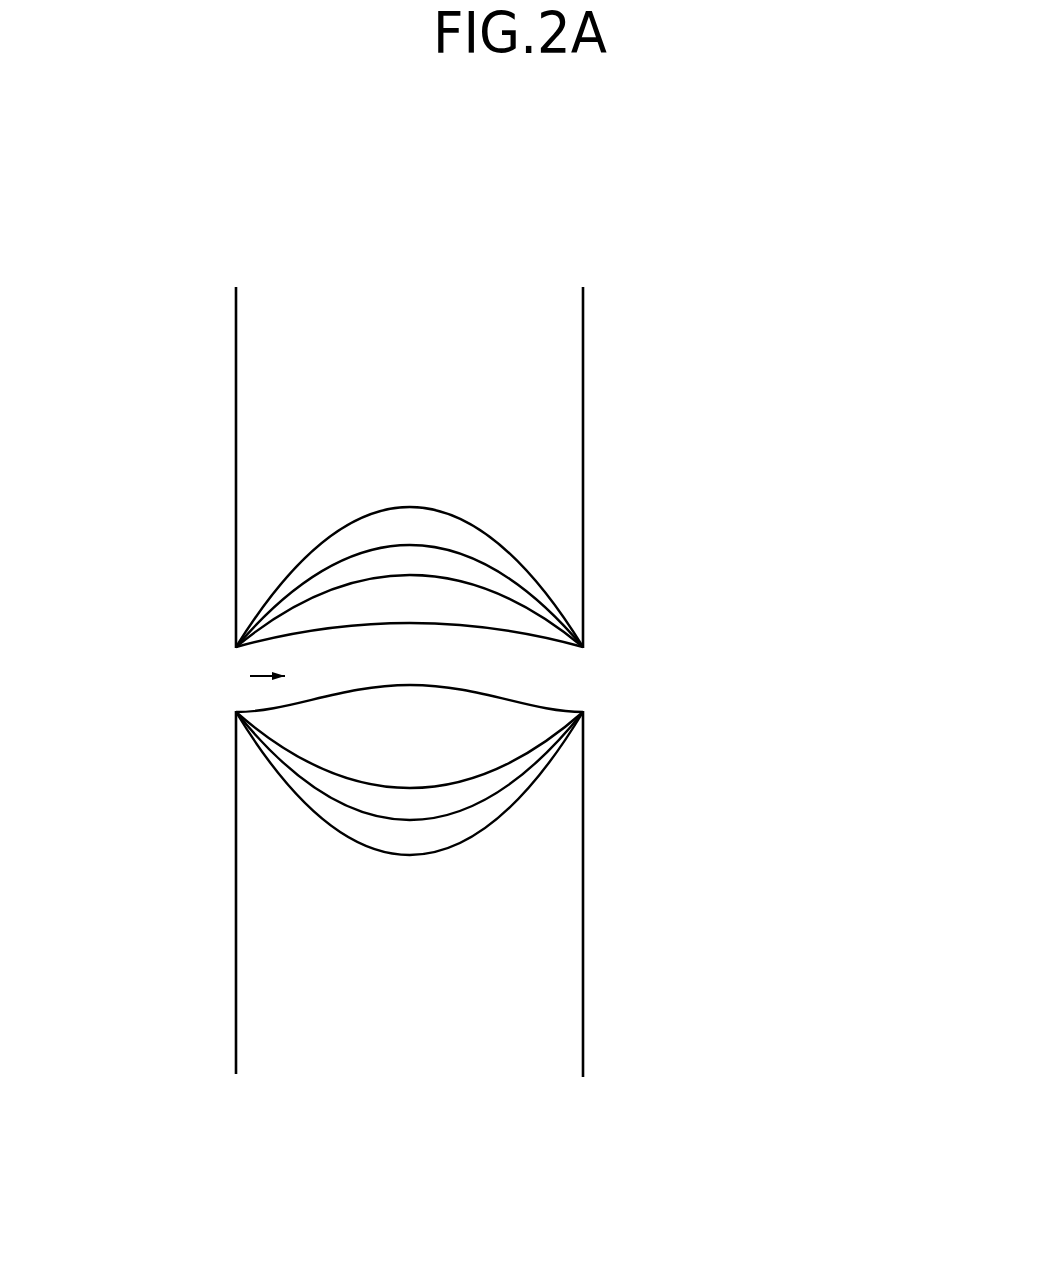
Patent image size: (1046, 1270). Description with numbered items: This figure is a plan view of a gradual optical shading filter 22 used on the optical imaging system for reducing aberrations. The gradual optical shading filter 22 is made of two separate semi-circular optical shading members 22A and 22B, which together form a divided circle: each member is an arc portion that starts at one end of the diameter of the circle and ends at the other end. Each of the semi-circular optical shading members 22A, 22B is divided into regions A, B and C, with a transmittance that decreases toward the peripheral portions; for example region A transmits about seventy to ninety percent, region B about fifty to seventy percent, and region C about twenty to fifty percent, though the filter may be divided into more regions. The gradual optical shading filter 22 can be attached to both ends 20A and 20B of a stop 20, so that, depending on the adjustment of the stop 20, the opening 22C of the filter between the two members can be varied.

The stop 20 is at (493, 682).
The end of stop 20A is at (555, 440).
The end of stop 20B is at (566, 933).
The gradual optical shading filter 22 is at (438, 683).
The semi-circular optical shading member 22A is at (508, 598).
The semi-circular optical shading member 22B is at (515, 766).
The opening of the gradual optical shading filter 22C is at (250, 676).